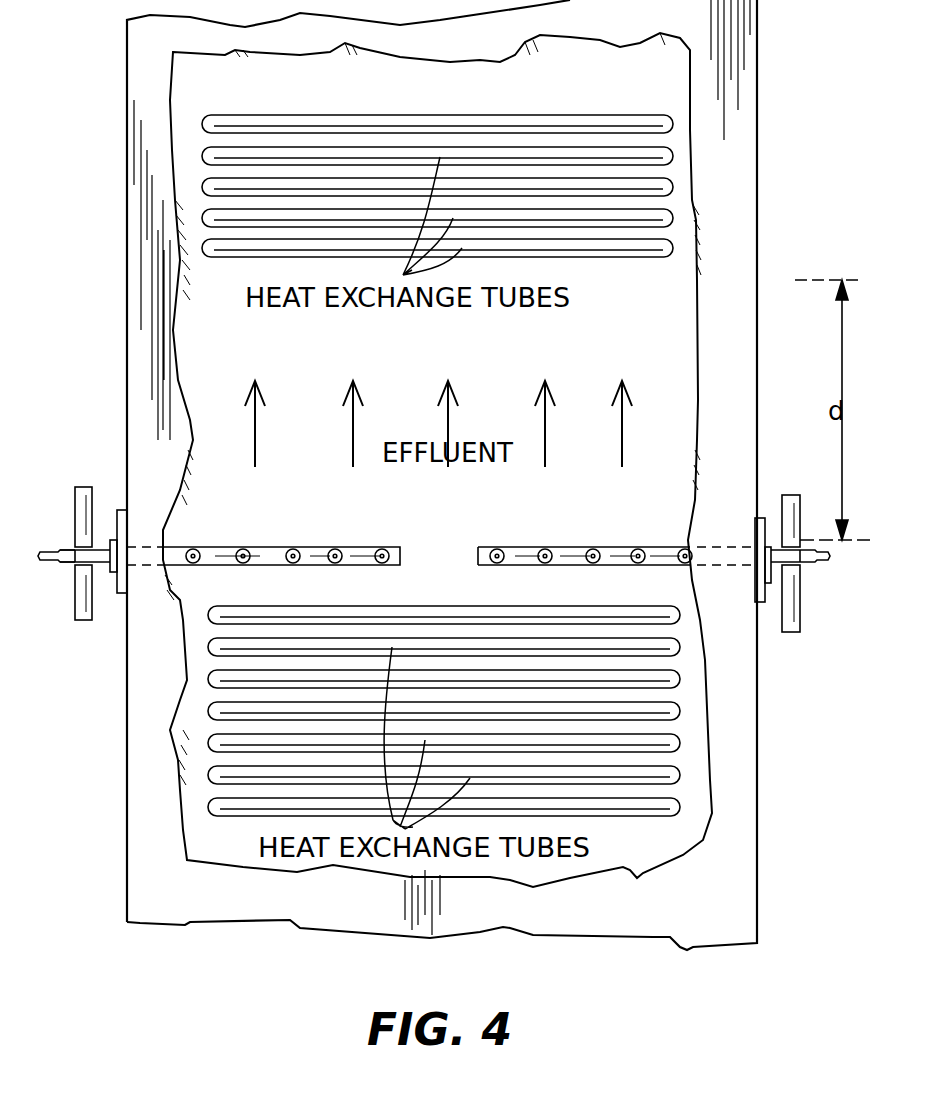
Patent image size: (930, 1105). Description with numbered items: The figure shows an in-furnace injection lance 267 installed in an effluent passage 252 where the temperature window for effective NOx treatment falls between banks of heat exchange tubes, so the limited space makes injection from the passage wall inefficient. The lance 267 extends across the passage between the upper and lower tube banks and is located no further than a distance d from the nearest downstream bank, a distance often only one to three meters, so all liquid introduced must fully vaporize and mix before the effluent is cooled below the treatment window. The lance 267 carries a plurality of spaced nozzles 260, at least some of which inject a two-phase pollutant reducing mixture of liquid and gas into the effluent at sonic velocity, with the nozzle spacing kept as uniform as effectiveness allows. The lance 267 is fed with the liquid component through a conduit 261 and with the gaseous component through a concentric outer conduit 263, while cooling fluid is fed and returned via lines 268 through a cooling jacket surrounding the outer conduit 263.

The effluent passage 252 is at (665, 305).
The nozzles 260 is at (382, 547).
The conduit 261 is at (60, 556).
The concentric outer conduit 263 is at (60, 547).
The injection lance 267 is at (400, 558).
The lines 268 is at (78, 487).